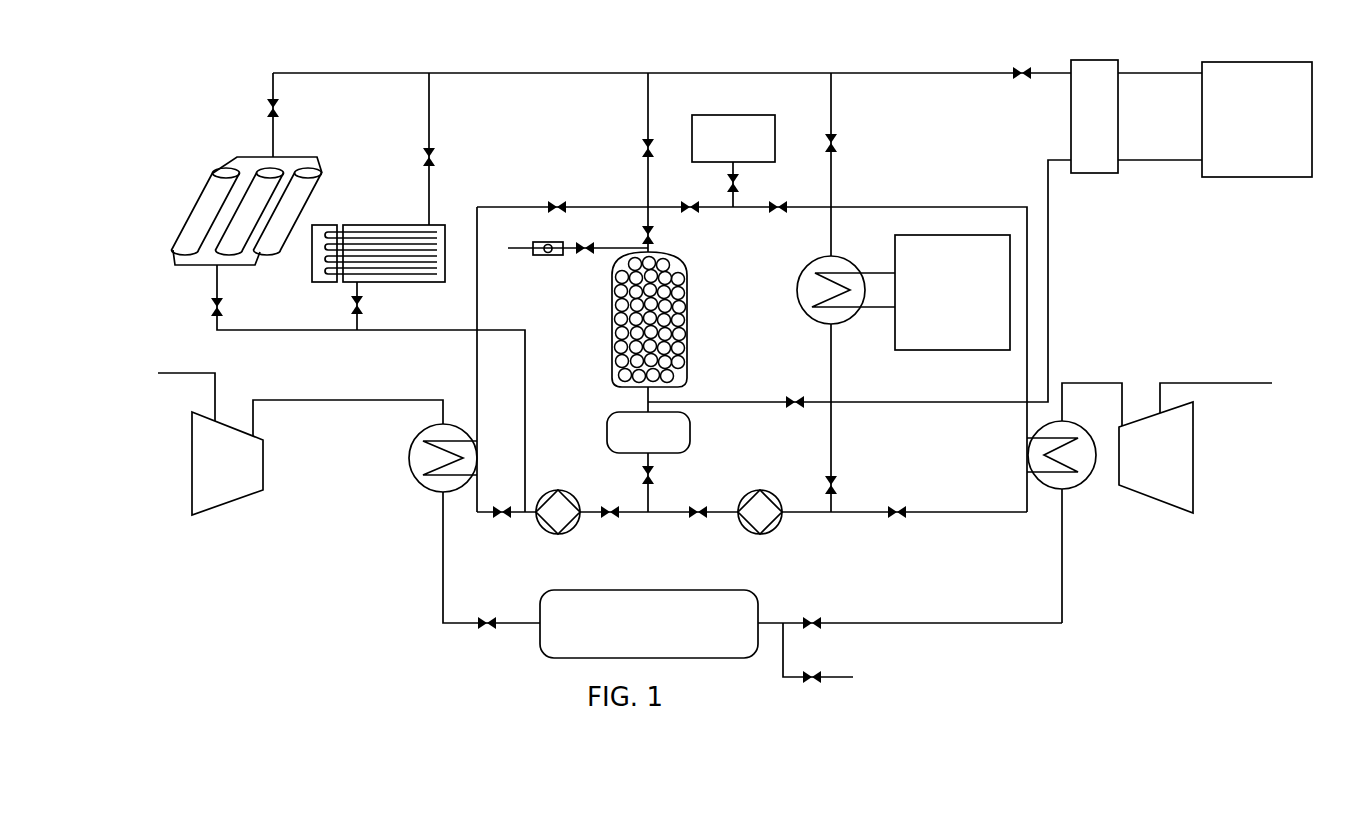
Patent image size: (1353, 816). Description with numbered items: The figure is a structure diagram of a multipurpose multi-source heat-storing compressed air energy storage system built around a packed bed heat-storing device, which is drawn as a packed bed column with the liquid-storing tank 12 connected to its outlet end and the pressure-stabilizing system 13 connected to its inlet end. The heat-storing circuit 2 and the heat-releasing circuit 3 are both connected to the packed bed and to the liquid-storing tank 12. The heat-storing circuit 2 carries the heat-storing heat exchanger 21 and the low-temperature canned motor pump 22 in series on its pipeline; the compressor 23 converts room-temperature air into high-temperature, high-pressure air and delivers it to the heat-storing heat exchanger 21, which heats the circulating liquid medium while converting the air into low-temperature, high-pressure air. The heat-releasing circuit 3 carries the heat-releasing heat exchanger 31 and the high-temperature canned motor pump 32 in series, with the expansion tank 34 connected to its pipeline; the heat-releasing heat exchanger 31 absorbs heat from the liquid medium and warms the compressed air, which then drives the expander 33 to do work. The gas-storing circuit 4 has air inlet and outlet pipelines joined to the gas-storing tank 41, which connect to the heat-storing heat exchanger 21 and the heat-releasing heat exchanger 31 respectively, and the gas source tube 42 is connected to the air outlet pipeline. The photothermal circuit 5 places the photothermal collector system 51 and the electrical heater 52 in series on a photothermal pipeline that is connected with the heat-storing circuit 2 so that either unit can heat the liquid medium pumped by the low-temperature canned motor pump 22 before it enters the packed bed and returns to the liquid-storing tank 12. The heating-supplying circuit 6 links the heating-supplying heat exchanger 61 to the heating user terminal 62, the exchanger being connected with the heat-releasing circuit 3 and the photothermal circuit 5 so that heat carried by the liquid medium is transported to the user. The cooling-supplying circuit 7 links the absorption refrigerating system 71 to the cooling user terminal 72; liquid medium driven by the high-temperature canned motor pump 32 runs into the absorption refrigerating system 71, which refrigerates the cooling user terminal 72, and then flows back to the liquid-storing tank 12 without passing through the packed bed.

The heat-storing circuit 2 is at (562, 342).
The heat-releasing circuit 3 is at (837, 343).
The gas-storing circuit 4 is at (910, 609).
The photothermal circuit 5 is at (368, 388).
The heating-supplying circuit 6 is at (842, 292).
The cooling-supplying circuit 7 is at (1160, 132).
The liquid-storing tank 12 is at (648, 462).
The pressure-stabilizing system 13 is at (578, 263).
The heat-storing heat exchanger 21 is at (456, 526).
The low-temperature canned motor pump 22 is at (558, 527).
The compressor 23 is at (300, 444).
The heat-releasing heat exchanger 31 is at (1074, 503).
The high-temperature canned motor pump 32 is at (760, 526).
The expander 33 is at (1195, 448).
The expansion tank 34 is at (733, 161).
The gas-storing tank 41 is at (649, 624).
The gas source tube 42 is at (818, 653).
The photothermal collector system 51 is at (238, 211).
The electrical heater 52 is at (378, 238).
The heating-supplying heat exchanger 61 is at (830, 290).
The heating user terminal 62 is at (952, 292).
The absorption refrigerating system 71 is at (1094, 116).
The cooling user terminal 72 is at (1257, 119).